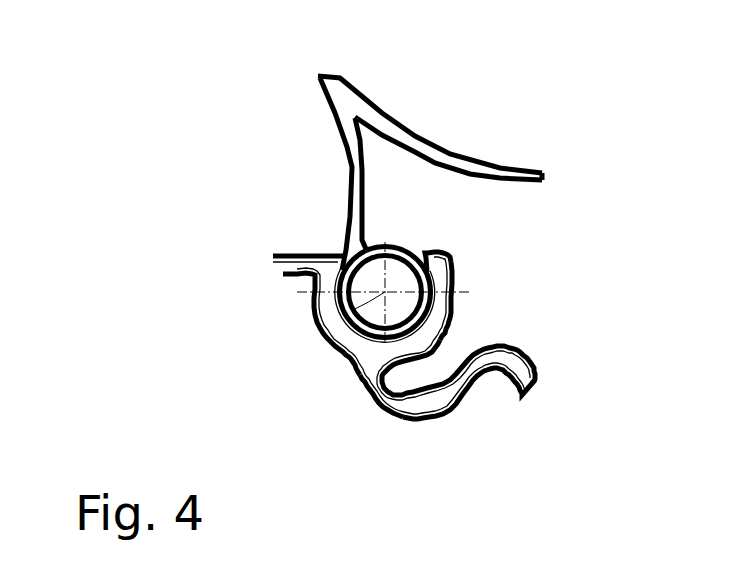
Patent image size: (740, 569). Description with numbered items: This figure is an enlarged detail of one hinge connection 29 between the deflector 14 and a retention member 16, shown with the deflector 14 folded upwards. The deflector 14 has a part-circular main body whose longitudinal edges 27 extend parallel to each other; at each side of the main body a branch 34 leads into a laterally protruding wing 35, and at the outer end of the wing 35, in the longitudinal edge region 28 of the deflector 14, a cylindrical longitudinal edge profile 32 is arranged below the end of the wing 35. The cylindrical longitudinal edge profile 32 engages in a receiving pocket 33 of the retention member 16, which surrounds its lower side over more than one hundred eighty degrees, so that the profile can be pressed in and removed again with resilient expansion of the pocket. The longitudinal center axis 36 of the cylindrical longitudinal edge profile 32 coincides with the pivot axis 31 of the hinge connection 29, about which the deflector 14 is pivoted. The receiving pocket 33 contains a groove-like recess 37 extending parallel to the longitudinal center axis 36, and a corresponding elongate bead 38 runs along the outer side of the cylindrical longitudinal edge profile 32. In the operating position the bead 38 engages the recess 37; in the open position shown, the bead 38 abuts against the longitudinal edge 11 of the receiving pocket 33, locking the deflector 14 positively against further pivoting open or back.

The deflector 14 is at (432, 129).
The branch 34 is at (348, 102).
The longitudinal edge 27 is at (540, 168).
The wing 35 is at (357, 193).
The longitudinal edge region 28 is at (350, 239).
The hinge connection 29 is at (399, 240).
The bead 38 is at (414, 246).
The longitudinal edge 11 is at (425, 250).
The groove-like recess 37 is at (456, 305).
The receiving pocket 33 is at (432, 308).
The pivot axis 31 is at (313, 314).
The longitudinal center axis 36 is at (263, 297).
The cylindrical longitudinal edge profile 32 is at (362, 331).
The retention member 16 is at (419, 416).